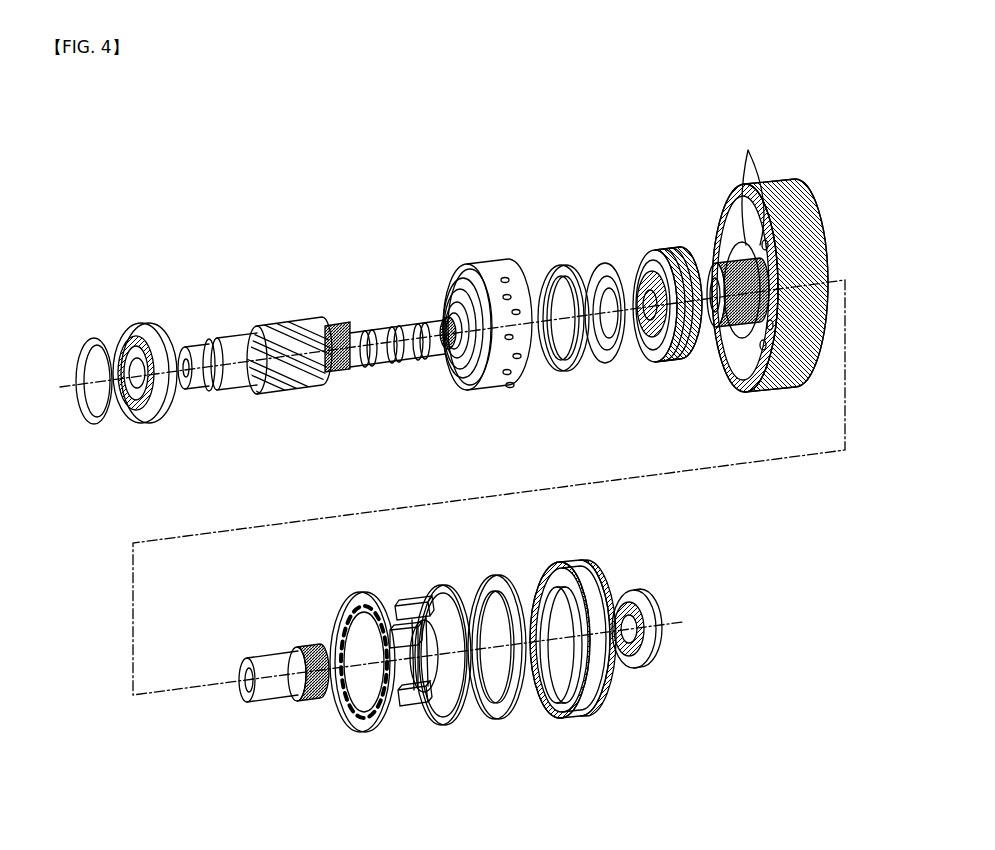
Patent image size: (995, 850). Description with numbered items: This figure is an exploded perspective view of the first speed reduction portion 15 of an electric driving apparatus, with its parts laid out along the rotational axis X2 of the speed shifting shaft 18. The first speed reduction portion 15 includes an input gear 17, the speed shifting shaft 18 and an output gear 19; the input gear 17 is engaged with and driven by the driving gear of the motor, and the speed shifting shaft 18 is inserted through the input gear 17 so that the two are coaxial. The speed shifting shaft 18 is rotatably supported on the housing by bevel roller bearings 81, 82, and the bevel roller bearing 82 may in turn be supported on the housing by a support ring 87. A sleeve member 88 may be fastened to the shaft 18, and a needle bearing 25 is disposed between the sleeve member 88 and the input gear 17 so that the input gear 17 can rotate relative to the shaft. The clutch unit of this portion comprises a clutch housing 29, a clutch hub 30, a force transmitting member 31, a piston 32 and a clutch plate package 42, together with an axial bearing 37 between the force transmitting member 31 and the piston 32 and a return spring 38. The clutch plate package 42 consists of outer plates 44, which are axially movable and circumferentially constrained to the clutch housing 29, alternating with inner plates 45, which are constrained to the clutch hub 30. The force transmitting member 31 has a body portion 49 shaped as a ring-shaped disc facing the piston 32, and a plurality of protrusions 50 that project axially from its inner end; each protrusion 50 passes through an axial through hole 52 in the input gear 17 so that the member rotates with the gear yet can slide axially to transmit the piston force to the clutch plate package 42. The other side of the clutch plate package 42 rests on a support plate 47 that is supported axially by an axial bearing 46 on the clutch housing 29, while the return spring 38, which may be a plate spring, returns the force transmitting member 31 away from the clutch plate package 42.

The first speed reduction portion 15 is at (389, 228).
The input gear 17 is at (770, 246).
The speed shifting shaft 18 is at (226, 340).
The output gear 19 is at (282, 322).
The needle bearing 25 is at (300, 700).
The clutch housing 29 is at (478, 268).
The clutch hub 30 is at (742, 330).
The force transmitting member 31 is at (470, 700).
The piston 32 is at (588, 706).
The axial bearing 37 is at (512, 718).
The return spring 38 is at (352, 720).
The clutch plate package 42 is at (662, 285).
The outer plate 44 is at (670, 250).
The inner plate 45 is at (657, 333).
The axial bearing 46 is at (557, 262).
The support plate 47 is at (602, 260).
The body portion 49 is at (433, 699).
The protrusion 50 is at (412, 705).
The axial through hole 52 is at (749, 184).
The bevel roller bearing 81 is at (645, 657).
The bevel roller bearing 82 is at (146, 322).
The support ring 87 is at (90, 336).
The sleeve member 88 is at (248, 703).
The rotational axis X2 is at (678, 623).